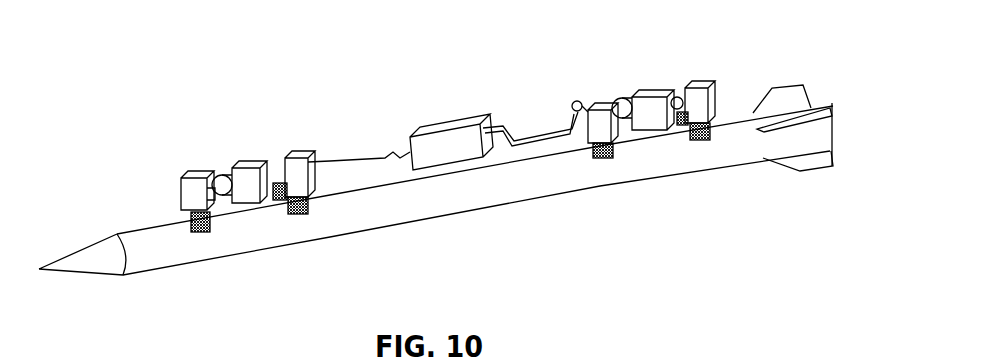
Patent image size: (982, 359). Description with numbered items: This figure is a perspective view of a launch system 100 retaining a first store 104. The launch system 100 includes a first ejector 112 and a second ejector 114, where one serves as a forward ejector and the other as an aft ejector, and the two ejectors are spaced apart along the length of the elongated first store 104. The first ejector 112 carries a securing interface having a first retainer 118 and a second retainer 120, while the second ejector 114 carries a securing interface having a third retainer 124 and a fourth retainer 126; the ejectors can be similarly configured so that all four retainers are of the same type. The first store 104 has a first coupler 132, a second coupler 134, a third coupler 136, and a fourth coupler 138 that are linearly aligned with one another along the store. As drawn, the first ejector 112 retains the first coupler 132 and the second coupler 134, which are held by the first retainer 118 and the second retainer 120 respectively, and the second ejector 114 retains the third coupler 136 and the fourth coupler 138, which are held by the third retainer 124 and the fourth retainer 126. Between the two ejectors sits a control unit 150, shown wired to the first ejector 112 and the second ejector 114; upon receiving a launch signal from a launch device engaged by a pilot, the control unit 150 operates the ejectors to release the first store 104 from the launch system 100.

The launch system 100 is at (436, 157).
The first store 104 is at (141, 220).
The first ejector 112 is at (241, 226).
The second ejector 114 is at (651, 154).
The first retainer 118 is at (190, 255).
The second retainer 120 is at (308, 235).
The third retainer 124 is at (591, 187).
The fourth retainer 126 is at (712, 163).
The first coupler 132 is at (200, 234).
The second coupler 134 is at (294, 213).
The third coupler 136 is at (597, 157).
The fourth coupler 138 is at (703, 143).
The control unit 150 is at (439, 122).